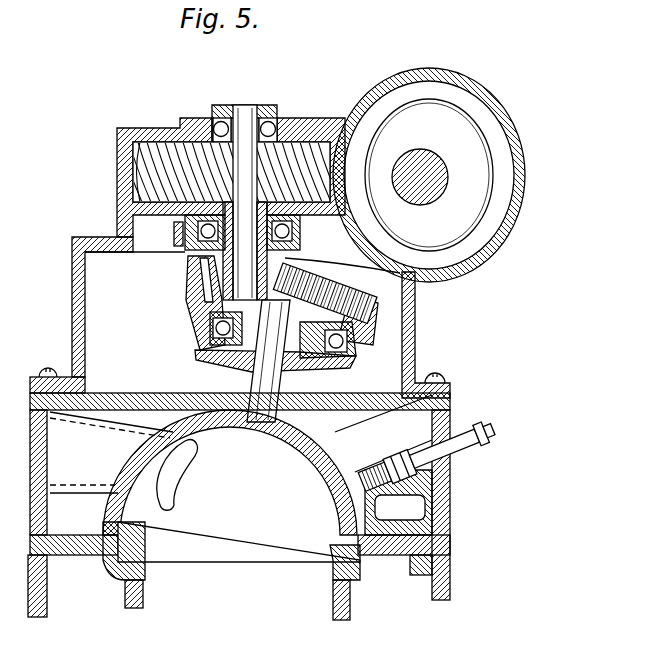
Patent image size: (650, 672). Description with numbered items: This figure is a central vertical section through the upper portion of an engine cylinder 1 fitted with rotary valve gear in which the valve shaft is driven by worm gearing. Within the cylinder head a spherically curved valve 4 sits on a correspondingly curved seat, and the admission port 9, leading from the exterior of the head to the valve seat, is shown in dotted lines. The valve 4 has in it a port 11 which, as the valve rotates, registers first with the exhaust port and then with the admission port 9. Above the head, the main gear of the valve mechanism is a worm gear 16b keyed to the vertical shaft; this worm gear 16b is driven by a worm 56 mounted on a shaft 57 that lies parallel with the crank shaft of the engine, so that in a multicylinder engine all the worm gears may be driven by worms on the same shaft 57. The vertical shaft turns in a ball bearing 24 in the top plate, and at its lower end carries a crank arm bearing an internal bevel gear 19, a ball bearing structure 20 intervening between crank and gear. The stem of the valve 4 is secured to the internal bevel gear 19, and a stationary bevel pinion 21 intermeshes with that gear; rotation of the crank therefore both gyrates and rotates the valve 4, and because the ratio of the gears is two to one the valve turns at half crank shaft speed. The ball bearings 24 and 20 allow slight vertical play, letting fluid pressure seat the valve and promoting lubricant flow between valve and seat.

The engine cylinder 1 is at (145, 590).
The valve 4 is at (336, 488).
The admission port 9 is at (83, 426).
The port 11 is at (184, 494).
The worm gear 16b is at (165, 160).
The internal bevel gear 19 is at (380, 309).
The ball bearing structure 20 is at (346, 350).
The bevel pinion 21 is at (202, 283).
The ball bearing 24 is at (292, 232).
The worm 56 is at (487, 124).
The shaft 57 is at (432, 191).